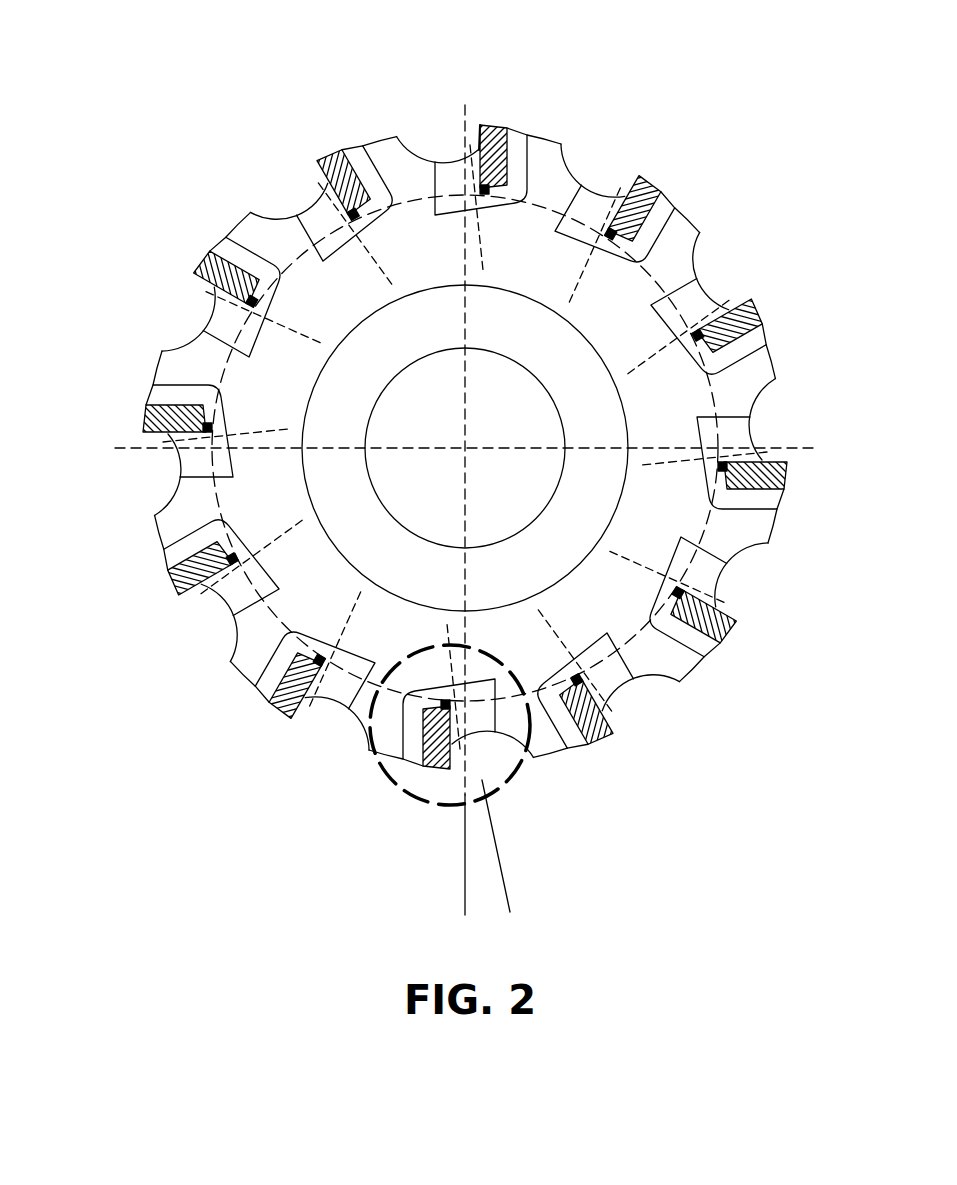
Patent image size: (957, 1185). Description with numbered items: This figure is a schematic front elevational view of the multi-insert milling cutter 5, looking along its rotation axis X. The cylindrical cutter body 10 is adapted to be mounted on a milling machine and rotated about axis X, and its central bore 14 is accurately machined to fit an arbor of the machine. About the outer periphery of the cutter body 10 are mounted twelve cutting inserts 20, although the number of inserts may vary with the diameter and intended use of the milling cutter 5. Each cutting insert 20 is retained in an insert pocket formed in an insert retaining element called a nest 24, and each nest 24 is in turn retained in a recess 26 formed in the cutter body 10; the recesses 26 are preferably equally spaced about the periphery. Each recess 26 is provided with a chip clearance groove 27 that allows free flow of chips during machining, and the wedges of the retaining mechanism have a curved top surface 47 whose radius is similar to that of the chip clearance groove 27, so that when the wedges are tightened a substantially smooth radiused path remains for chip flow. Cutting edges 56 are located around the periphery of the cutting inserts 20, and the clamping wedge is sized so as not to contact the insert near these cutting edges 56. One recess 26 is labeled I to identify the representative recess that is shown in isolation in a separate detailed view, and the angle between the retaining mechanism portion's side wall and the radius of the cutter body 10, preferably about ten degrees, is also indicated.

The milling cutter 5 is at (232, 42).
The cutter body 10 is at (298, 606).
The central bore 14 is at (412, 482).
The cutting insert 20 is at (494, 128).
The nest 24 is at (528, 135).
The recess 26 is at (461, 381).
The chip clearance groove 27 is at (428, 128).
The top surface 47 is at (210, 300).
The cutting edges 56 is at (479, 122).
The axis X is at (470, 452).
The recess label I is at (395, 768).